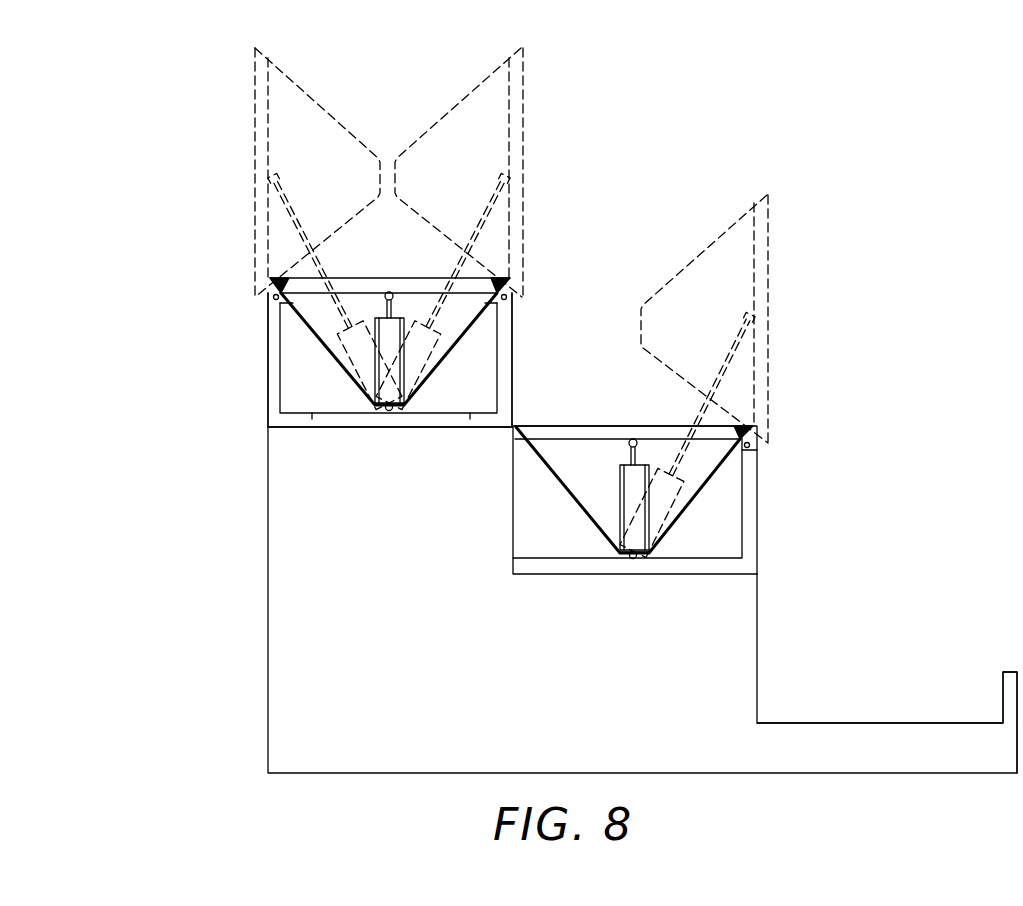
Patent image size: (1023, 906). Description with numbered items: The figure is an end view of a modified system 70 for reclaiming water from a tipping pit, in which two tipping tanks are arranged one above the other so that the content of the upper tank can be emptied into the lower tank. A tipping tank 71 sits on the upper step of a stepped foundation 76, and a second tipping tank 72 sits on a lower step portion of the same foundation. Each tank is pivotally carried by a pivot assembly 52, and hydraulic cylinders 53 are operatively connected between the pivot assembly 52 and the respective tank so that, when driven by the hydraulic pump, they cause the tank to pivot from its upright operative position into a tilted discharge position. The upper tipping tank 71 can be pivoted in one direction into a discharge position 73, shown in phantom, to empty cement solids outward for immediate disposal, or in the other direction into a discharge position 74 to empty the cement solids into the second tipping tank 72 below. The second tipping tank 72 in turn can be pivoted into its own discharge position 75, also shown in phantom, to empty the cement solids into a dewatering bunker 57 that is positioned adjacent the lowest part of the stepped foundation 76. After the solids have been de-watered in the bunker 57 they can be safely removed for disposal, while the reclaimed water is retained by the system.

The modified system 70 is at (695, 148).
The pivot assembly 52 is at (268, 375).
The hydraulic cylinders 53 is at (393, 412).
The de-watering bunker 57 is at (942, 727).
The tipping tank 71 is at (376, 305).
The second tipping tank 72 is at (581, 451).
The discharge position 73 is at (257, 102).
The discharge position 74 is at (523, 97).
The discharge position 75 is at (763, 255).
The stepped foundation 76 is at (277, 660).